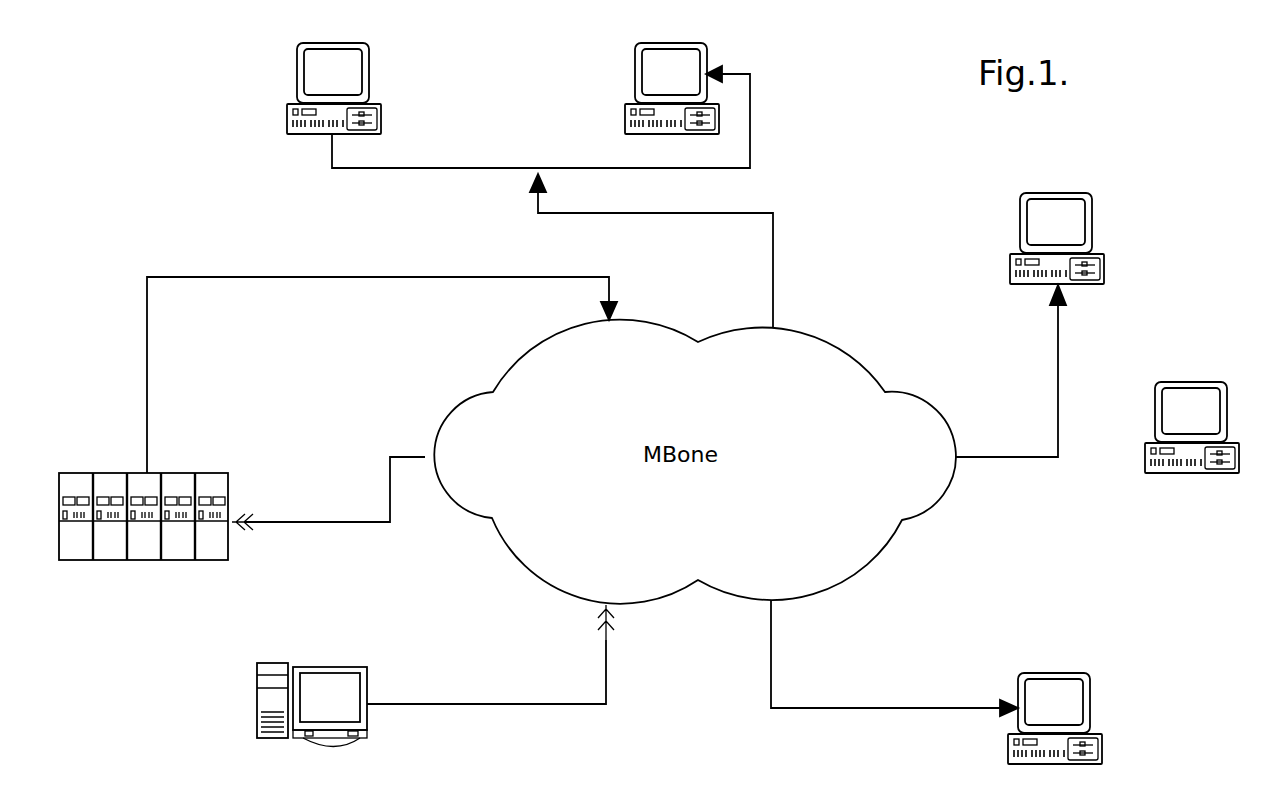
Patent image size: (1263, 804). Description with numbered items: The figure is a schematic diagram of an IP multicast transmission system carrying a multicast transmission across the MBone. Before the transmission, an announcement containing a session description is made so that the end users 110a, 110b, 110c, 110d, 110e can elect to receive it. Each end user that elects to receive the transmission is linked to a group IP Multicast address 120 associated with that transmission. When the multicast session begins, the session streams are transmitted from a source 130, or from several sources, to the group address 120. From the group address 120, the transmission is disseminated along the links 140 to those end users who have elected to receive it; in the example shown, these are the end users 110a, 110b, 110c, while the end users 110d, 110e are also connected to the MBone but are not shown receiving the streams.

The end user 110a is at (1092, 222).
The end user 110b is at (1058, 673).
The end user 110c is at (635, 72).
The end user 110d is at (1192, 382).
The end user 110e is at (297, 72).
The group IP Multicast address 120 is at (150, 562).
The source 130 is at (257, 710).
The links 140 is at (790, 112).